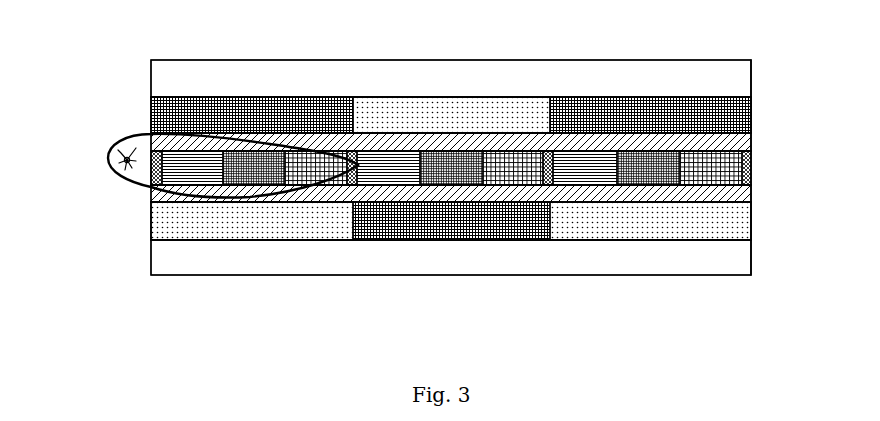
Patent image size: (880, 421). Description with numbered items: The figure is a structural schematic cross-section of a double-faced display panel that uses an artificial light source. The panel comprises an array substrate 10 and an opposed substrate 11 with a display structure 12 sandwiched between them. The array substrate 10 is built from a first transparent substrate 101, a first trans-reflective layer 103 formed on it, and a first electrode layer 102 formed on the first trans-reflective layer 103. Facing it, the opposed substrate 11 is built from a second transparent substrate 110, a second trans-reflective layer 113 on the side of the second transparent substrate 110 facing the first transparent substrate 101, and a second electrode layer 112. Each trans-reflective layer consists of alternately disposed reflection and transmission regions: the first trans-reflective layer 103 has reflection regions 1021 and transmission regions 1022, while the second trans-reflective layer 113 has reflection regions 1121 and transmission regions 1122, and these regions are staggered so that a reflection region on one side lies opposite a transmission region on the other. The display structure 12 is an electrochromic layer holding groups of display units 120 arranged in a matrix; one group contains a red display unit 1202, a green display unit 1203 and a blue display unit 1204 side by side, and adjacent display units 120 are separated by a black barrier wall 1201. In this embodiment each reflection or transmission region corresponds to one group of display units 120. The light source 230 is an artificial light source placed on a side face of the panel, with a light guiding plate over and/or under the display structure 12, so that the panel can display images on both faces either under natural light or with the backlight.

The array substrate 10 is at (832, 188).
The opposed substrate 11 is at (832, 148).
The display structure 12 is at (757, 151).
The first transparent substrate 101 is at (722, 256).
The first electrode layer 102 is at (726, 196).
The first trans-reflective layer 103 is at (757, 202).
The second transparent substrate 110 is at (722, 80).
The second electrode layer 112 is at (728, 142).
The second trans-reflective layer 113 is at (757, 97).
The display units 120 is at (156, 196).
The artificial light source 230 is at (108, 158).
The reflection region of the first trans-reflective layer 1021 is at (448, 215).
The transmission region of the first trans-reflective layer 1022 is at (247, 215).
The reflection region of the second trans-reflective layer 1121 is at (178, 116).
The transmission region of the second trans-reflective layer 1122 is at (450, 120).
The black barrier wall 1201 is at (150, 153).
The red display unit 1202 is at (192, 158).
The green display unit 1203 is at (262, 158).
The blue display unit 1204 is at (312, 158).